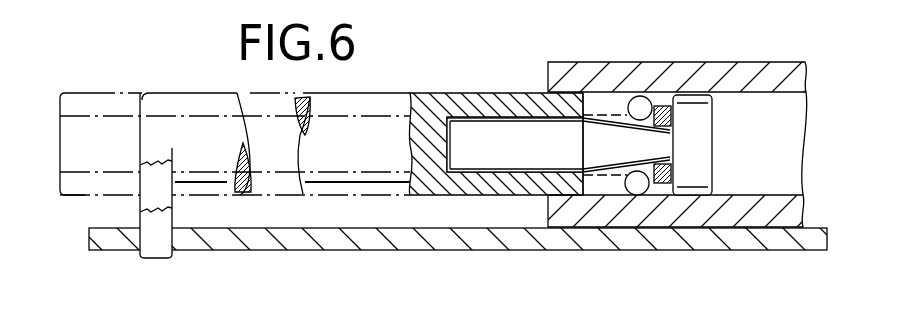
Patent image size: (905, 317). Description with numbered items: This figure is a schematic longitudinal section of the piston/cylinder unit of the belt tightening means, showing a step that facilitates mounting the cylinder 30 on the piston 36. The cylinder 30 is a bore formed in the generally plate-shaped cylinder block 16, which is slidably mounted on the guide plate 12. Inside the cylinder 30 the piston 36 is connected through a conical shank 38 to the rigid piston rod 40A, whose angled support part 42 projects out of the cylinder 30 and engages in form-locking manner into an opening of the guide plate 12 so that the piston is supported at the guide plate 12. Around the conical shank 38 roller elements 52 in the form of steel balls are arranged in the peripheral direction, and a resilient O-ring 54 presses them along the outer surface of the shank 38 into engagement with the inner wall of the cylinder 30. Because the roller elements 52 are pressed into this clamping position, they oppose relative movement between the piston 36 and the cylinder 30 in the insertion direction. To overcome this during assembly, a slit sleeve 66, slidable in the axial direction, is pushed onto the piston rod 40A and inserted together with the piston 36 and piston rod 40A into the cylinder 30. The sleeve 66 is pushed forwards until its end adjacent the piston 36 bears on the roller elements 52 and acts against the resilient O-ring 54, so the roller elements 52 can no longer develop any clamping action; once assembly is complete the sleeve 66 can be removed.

The guide plate 12 is at (580, 242).
The cylinder block 16 is at (793, 213).
The cylinder 30 is at (763, 98).
The piston 36 is at (703, 150).
The conical shank 38 is at (603, 150).
The piston rod 40A is at (507, 152).
The support part 42 is at (140, 258).
The roller elements 52 is at (640, 97).
The resilient O-ring 54 is at (660, 106).
The slit sleeve 66 is at (83, 177).